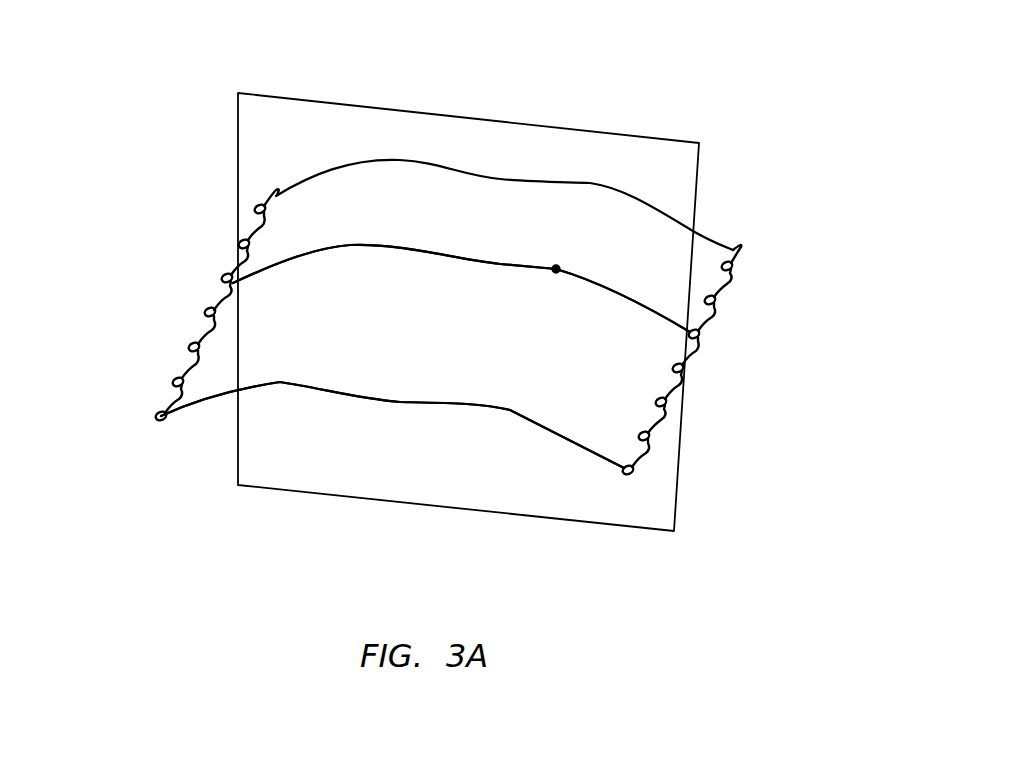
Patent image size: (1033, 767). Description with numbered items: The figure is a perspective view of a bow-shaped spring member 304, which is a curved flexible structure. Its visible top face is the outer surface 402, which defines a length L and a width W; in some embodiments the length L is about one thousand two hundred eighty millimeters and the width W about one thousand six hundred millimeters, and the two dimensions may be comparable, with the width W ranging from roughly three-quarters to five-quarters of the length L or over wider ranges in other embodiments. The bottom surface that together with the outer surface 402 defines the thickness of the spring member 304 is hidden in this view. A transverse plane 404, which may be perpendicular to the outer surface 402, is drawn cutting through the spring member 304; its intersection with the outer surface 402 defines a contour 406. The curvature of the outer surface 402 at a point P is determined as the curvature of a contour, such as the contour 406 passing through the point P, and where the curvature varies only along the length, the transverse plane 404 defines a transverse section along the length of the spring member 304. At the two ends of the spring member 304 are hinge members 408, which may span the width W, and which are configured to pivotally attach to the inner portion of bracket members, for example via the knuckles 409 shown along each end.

The bow-shaped spring member 304 is at (712, 95).
The outer surface 402 is at (364, 376).
The transverse plane 404 is at (257, 131).
The contour 406 is at (305, 257).
The hinge members 408 is at (126, 385).
The knuckles 409 is at (205, 290).
The point P is at (556, 265).
The length L is at (138, 504).
The width W is at (707, 493).